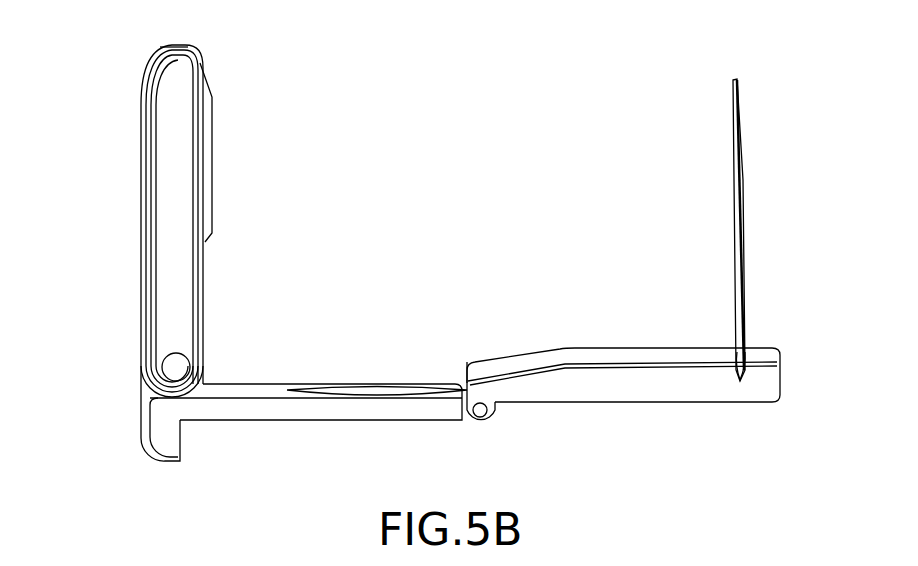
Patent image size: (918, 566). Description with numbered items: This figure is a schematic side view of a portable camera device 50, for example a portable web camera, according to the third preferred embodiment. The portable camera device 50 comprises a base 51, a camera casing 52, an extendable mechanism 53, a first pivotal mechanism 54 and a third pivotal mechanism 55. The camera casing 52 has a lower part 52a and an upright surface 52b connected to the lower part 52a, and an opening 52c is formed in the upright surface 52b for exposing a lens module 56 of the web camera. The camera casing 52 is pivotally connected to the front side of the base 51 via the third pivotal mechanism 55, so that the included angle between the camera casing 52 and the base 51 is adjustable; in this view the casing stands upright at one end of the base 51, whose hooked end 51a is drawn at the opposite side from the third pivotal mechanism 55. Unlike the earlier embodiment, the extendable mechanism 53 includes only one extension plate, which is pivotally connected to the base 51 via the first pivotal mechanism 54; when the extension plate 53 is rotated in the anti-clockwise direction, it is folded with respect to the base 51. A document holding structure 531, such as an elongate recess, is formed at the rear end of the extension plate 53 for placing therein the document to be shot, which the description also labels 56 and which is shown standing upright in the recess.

The portable camera device 50 is at (662, 45).
The base 51 is at (308, 410).
The hooked end of base plate 51a is at (167, 430).
The camera casing 52 is at (178, 113).
The lower part 52a is at (152, 392).
The upright surface 52b is at (202, 68).
The opening 52c is at (207, 160).
The extendable mechanism 53 is at (647, 383).
The document holding structure 531 is at (743, 370).
The first pivotal mechanism 54 is at (492, 412).
The third pivotal mechanism 55 is at (177, 368).
The lens module 56 is at (743, 200).